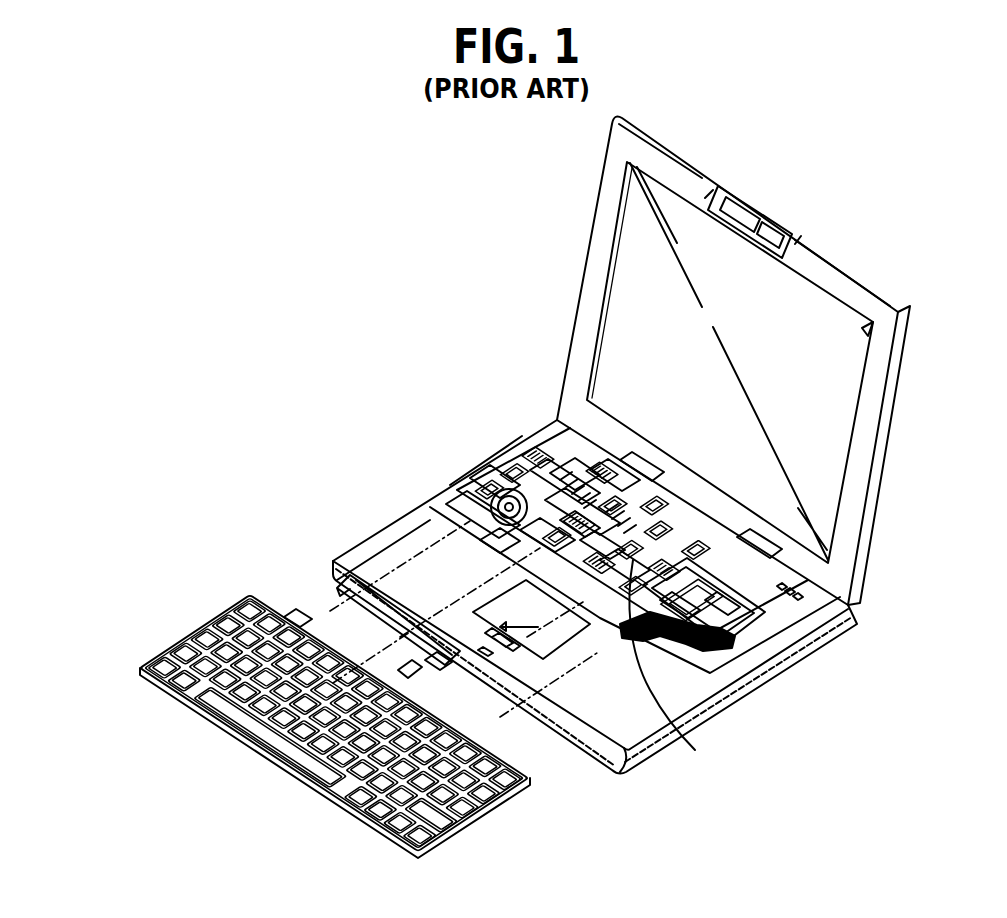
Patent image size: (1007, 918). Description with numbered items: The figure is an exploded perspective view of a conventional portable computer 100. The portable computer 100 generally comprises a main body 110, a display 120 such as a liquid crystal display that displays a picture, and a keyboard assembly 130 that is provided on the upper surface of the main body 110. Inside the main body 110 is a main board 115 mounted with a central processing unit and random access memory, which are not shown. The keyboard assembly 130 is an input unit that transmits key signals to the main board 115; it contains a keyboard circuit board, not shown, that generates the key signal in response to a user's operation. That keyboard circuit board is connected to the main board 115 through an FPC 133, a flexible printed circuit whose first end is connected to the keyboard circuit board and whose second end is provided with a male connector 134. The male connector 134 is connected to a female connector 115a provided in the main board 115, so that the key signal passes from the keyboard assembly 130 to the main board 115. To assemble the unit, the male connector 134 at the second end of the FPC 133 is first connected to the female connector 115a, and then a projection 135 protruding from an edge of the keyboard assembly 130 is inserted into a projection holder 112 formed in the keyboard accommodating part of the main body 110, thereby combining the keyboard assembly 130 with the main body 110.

The portable computer 100 is at (352, 321).
The main body 110 is at (435, 497).
The projection holder 112 is at (503, 457).
The main board 115 is at (720, 668).
The female connector 115a is at (683, 742).
The display 120 is at (893, 447).
The keyboard assembly 130 is at (193, 625).
The FPC 133 is at (408, 673).
The male connector 134 is at (437, 662).
The projection 135 is at (291, 618).